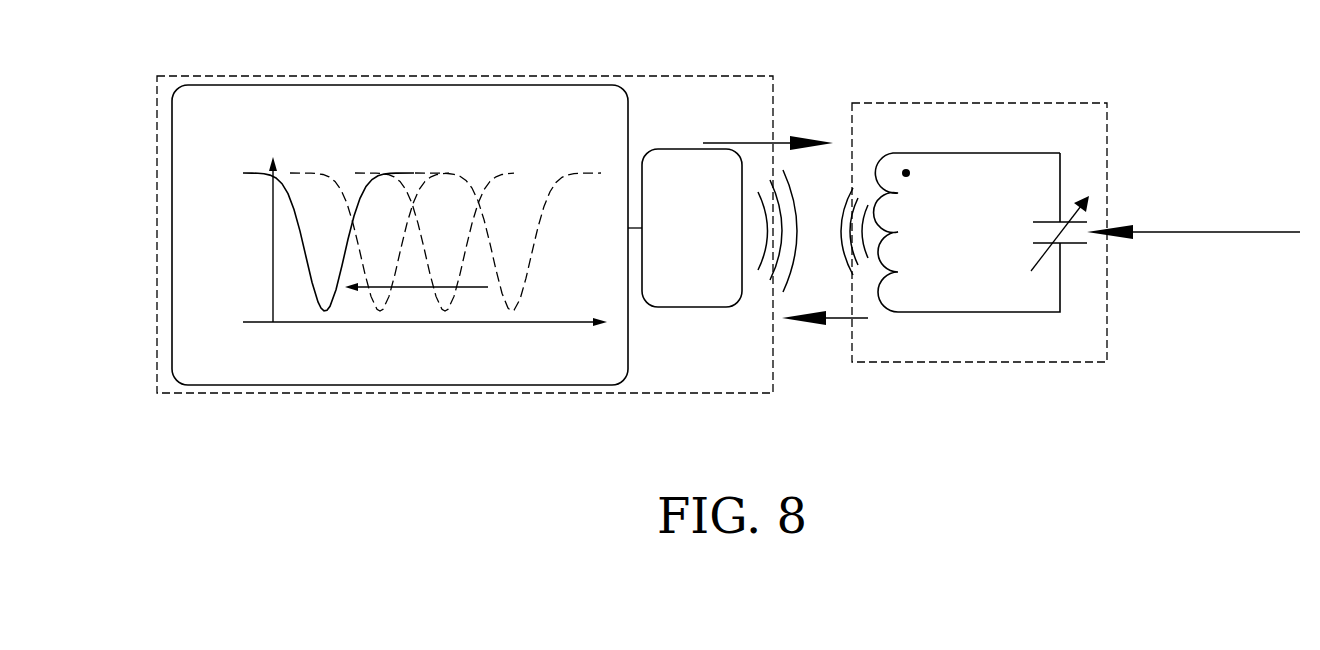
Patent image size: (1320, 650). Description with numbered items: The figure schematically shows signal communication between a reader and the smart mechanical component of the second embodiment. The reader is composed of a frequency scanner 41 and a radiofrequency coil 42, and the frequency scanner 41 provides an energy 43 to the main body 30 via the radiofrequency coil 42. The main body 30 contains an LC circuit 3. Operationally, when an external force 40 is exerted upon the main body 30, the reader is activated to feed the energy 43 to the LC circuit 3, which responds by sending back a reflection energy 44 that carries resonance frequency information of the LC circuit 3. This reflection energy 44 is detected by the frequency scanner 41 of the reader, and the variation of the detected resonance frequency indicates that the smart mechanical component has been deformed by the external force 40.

The LC circuit 3 is at (958, 153).
The main body 30 is at (1107, 148).
The external force 40 is at (1222, 232).
The frequency scanner 41 is at (418, 78).
The radiofrequency coil 42 is at (680, 149).
The energy 43 is at (780, 142).
The reflection energy 44 is at (835, 320).